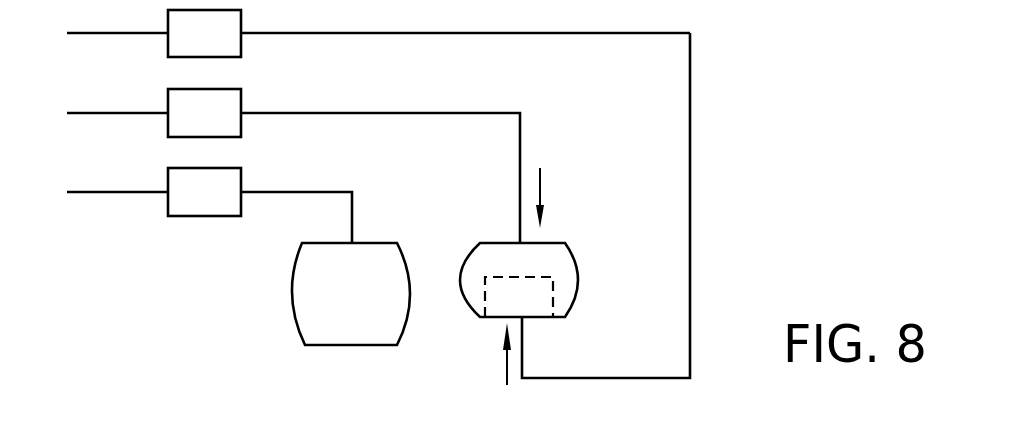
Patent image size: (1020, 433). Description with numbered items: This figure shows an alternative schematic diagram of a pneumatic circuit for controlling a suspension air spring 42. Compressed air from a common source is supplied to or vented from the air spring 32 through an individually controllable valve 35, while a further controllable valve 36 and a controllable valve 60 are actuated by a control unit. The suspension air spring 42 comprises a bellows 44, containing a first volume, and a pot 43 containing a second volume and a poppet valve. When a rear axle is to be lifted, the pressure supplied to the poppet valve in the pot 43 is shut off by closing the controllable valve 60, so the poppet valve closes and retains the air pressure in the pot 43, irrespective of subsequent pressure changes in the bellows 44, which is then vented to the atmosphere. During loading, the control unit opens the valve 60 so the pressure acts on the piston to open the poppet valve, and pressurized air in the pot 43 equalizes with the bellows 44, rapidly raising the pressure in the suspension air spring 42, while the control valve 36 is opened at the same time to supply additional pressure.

The controllable valve 60 is at (185, 58).
The controllable valve 36 is at (185, 138).
The controllable valve 35 is at (188, 216).
The air spring 32 is at (305, 315).
The suspension air spring 42 is at (463, 305).
The bellows 44 is at (487, 257).
The pot 43 is at (540, 292).